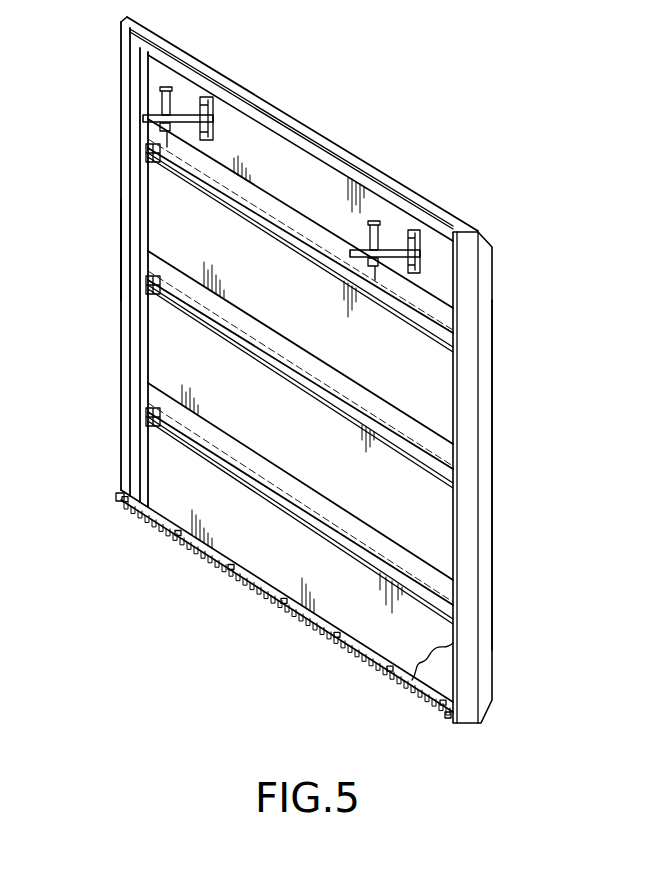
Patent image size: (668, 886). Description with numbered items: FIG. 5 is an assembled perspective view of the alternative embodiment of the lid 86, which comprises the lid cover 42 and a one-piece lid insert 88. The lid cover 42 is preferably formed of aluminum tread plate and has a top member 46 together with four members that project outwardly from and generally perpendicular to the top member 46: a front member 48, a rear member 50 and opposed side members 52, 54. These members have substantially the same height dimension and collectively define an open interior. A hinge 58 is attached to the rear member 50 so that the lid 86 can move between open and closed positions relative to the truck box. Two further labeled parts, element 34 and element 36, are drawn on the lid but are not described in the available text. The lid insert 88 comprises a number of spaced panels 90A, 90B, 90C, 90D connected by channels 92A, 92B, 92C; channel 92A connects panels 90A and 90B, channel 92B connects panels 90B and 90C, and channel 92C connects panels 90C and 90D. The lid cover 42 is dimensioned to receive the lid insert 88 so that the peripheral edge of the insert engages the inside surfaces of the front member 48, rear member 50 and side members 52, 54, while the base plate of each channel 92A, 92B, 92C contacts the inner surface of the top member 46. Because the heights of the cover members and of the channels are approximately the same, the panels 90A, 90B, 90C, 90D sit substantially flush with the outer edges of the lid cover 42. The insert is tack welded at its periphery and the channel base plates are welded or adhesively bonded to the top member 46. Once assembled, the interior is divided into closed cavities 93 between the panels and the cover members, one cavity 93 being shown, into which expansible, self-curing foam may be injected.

The bracket 34 is at (190, 118).
The bracket 36 is at (388, 250).
The lid cover 42 is at (558, 346).
The top member 46 is at (497, 295).
The front member 48 is at (302, 118).
The rear member 50 is at (453, 722).
The side member 52 is at (120, 488).
The side member 54 is at (491, 610).
The hinge 58 is at (185, 555).
The lid 86 is at (536, 158).
The lid insert 88 is at (140, 227).
The panel 90A is at (320, 185).
The panel 90B is at (435, 378).
The panel 90C is at (436, 515).
The panel 90D is at (300, 565).
The channel 92A is at (187, 148).
The channel 92B is at (177, 273).
The channel 92C is at (172, 405).
The closed cavity 93 is at (448, 672).